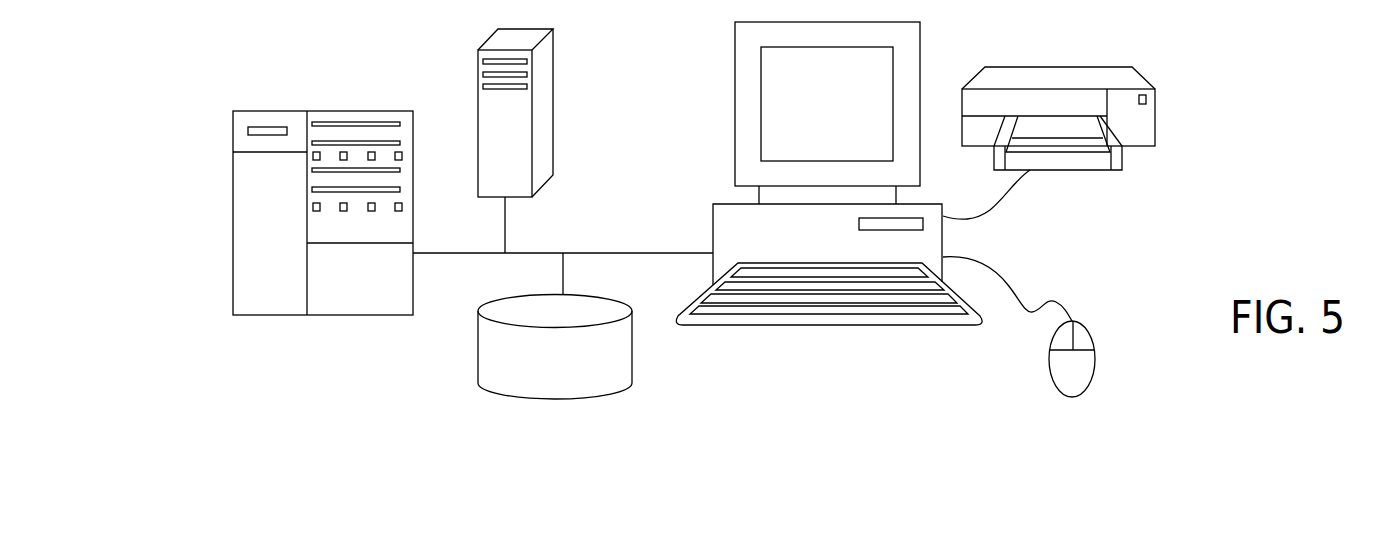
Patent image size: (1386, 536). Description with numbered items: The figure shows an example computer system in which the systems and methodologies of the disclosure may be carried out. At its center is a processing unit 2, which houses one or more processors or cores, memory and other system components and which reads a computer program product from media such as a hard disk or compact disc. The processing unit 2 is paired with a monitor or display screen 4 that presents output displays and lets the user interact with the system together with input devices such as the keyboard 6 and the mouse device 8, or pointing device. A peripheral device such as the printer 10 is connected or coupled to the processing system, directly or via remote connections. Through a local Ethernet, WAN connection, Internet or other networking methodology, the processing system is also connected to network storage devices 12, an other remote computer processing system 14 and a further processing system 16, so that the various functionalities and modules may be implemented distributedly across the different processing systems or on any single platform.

The processing unit 2 is at (713, 227).
The monitor or display screen 4 is at (735, 132).
The keyboard 6 is at (870, 325).
The mouse device 8 is at (1095, 375).
The printer 10 is at (1065, 67).
The network storage devices 12 is at (478, 348).
The other remote computer processing system 14 is at (554, 88).
The processing system 16 is at (374, 111).